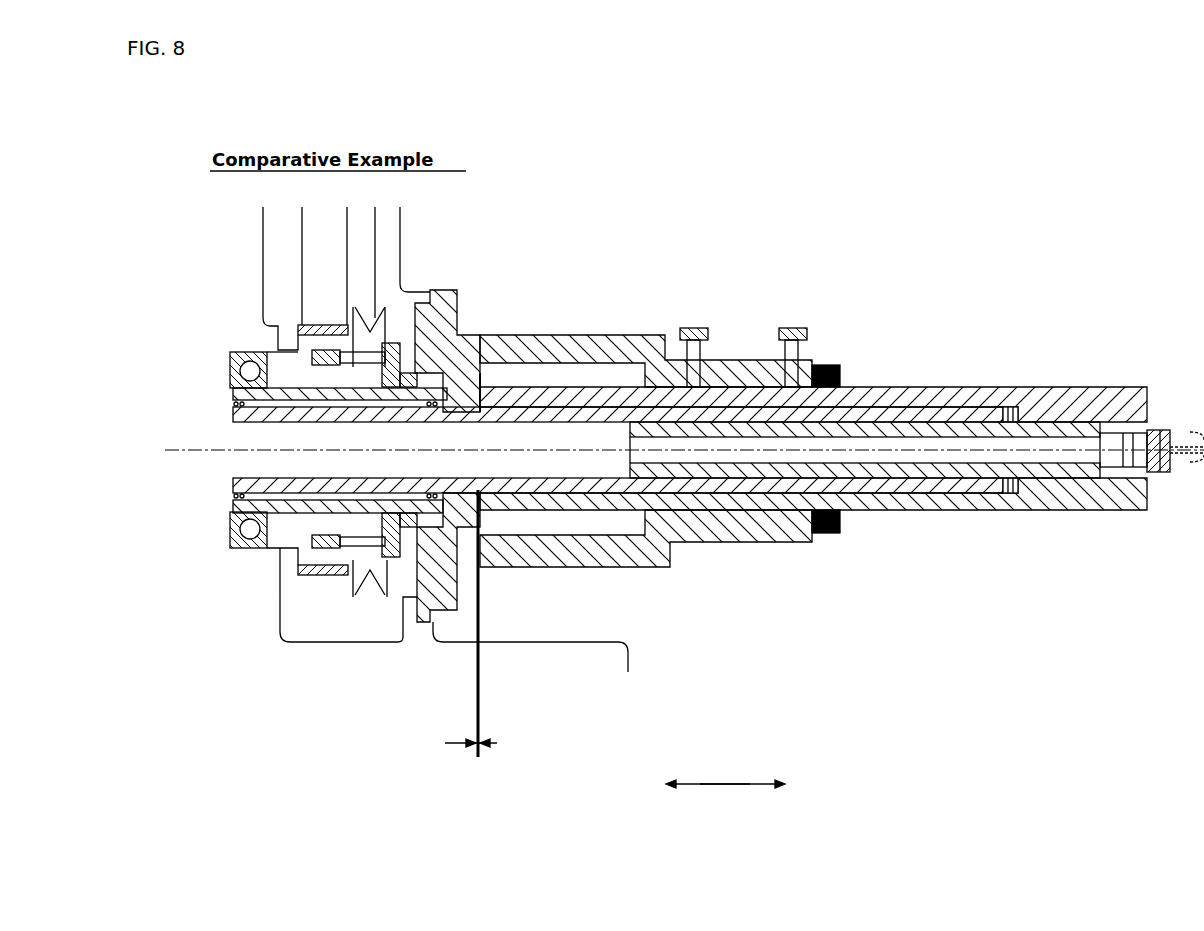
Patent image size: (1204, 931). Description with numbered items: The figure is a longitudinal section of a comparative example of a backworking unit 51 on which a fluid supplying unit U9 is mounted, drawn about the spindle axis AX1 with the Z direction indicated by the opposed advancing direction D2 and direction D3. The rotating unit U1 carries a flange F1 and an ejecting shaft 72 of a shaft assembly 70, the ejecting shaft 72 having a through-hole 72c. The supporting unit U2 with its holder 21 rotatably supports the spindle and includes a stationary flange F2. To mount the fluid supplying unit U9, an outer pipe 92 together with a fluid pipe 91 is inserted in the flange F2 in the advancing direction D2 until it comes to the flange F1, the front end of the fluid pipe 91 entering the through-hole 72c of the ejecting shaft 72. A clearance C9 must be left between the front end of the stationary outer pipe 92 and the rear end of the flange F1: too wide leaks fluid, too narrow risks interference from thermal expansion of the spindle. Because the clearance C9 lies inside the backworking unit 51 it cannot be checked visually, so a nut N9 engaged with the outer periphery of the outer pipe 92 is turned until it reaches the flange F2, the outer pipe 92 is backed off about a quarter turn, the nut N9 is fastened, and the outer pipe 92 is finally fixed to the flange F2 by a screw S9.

The through-hole 72c is at (245, 440).
The axis AX1 is at (215, 462).
The backworking unit 51 is at (283, 648).
The unit holder 21 is at (555, 643).
The supporting unit U2 is at (530, 623).
The flange F1 is at (480, 390).
The rotating unit U1 is at (459, 422).
The clearance C9 is at (484, 404).
The outer pipe 92 is at (1069, 510).
The fluid pipe 91 is at (1017, 500).
The ejecting shaft 72 is at (869, 497).
The shaft unit 70 is at (888, 544).
The fluid supplying unit U9 is at (1122, 514).
The screw S9 is at (791, 330).
The nut N9 is at (841, 372).
The flange F2 is at (763, 546).
The advancing direction D2 is at (678, 784).
The direction D3 is at (770, 784).
The Z axis Z is at (725, 802).